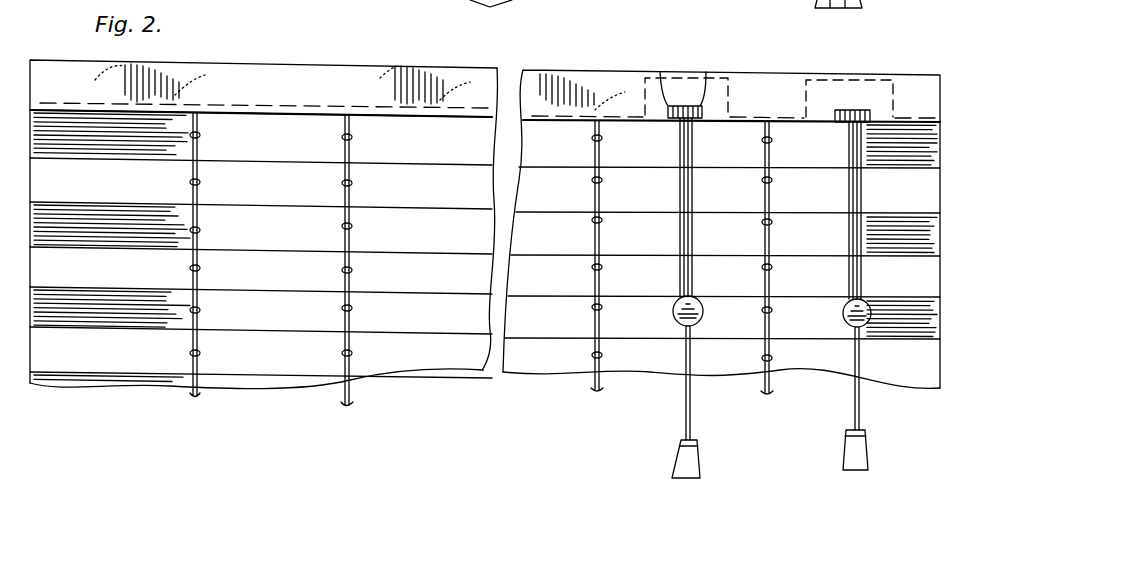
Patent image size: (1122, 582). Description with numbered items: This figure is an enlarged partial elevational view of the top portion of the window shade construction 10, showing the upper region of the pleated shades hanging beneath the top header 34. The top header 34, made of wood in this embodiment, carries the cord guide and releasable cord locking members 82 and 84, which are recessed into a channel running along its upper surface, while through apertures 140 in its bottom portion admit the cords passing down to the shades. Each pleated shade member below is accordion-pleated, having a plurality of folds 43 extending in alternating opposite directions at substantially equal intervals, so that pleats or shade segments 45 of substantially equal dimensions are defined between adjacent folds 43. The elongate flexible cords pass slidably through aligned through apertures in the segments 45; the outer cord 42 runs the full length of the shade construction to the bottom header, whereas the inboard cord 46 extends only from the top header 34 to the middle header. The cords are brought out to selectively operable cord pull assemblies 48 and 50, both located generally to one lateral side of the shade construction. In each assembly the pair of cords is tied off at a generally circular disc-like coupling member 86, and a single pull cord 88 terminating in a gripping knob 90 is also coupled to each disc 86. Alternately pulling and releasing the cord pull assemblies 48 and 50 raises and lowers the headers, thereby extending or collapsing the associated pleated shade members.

The venetian blind 10 is at (486, 397).
The top header member 34 is at (558, 92).
The elongate flexible cord member 42 is at (848, 189).
The folds 43 is at (436, 167).
The pleats or shade segments 45 is at (556, 158).
The cord 46 is at (604, 150).
The cord pull assembly 48 is at (715, 458).
The cord pull assembly 50 is at (848, 489).
The cord guide and releasable cord locking member 82 is at (673, 70).
The cord guide and releasable cord locking member 84 is at (838, 56).
The disc-like coupling member 86 is at (704, 318).
The pull cord 88 is at (684, 400).
The gripping knob 90 is at (680, 452).
The through apertures 140 is at (665, 72).